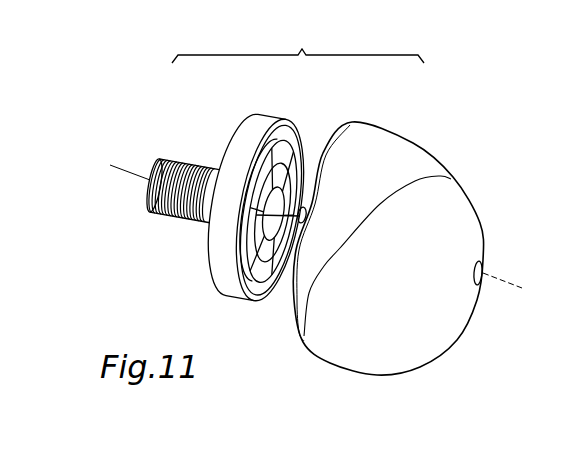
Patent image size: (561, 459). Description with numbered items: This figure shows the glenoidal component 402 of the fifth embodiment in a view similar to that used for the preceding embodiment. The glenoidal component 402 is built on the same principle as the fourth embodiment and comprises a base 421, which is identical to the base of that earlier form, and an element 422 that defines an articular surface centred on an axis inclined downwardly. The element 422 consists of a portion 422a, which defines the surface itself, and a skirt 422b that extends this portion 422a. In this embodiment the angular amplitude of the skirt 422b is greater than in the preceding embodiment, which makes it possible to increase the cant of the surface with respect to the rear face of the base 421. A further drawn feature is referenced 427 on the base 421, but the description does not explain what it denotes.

The knob assembly 402 is at (298, 44).
The knob base 421 is at (207, 148).
The knob head 422 is at (421, 233).
The rounded head portion 422a is at (462, 221).
The base collar portion 422b is at (373, 146).
The threaded stud 427 is at (163, 207).